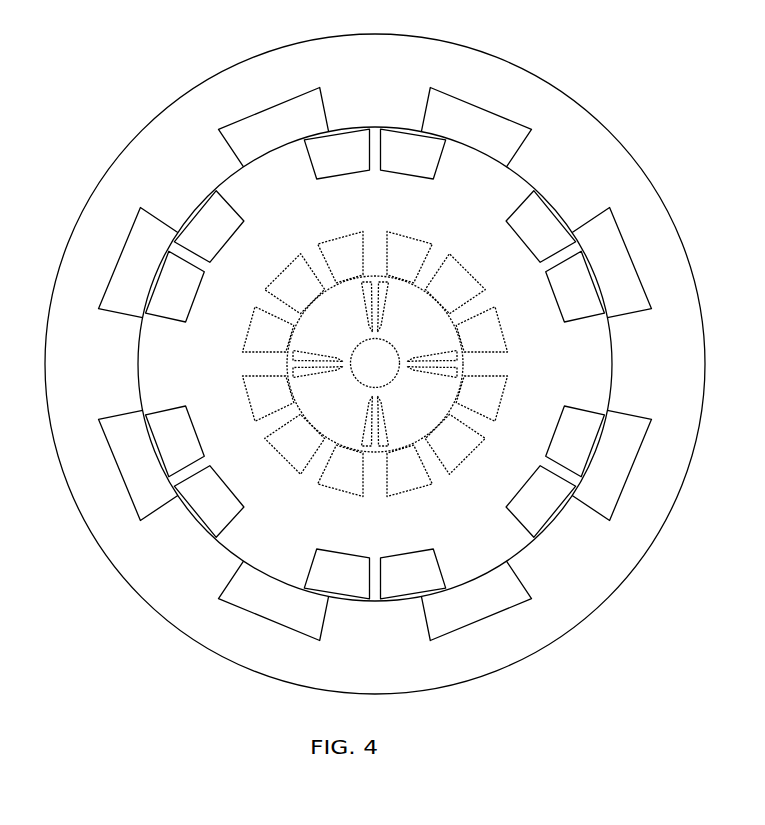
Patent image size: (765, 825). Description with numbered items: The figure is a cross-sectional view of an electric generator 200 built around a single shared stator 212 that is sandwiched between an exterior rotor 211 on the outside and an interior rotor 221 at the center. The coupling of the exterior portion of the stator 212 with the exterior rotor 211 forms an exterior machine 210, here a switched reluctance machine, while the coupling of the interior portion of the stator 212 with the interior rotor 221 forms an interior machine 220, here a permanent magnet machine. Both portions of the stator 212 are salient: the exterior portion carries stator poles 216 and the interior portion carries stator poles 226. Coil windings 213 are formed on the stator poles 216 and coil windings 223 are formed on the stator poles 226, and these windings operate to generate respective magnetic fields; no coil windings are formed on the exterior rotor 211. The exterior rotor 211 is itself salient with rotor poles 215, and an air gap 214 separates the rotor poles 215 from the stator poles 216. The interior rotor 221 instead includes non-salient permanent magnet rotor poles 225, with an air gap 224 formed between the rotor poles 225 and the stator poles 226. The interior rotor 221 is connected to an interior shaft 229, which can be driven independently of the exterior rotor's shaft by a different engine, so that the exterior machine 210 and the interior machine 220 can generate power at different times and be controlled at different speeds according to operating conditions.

The electric generator 200 is at (118, 68).
The exterior machine 210 is at (79, 191).
The exterior rotor 211 is at (352, 675).
The stator 212 is at (293, 540).
The coil windings 213 is at (425, 594).
The air gap 214 is at (194, 518).
The rotor poles 215 is at (228, 578).
The stator poles 216 is at (235, 529).
The interior machine 220 is at (432, 222).
The interior rotor 221 is at (330, 326).
The coil windings 223 is at (418, 483).
The air gap 224 is at (284, 358).
The permanent magnet rotor poles 225 is at (362, 423).
The stator poles 226 is at (336, 446).
The interior shaft 229 is at (378, 355).